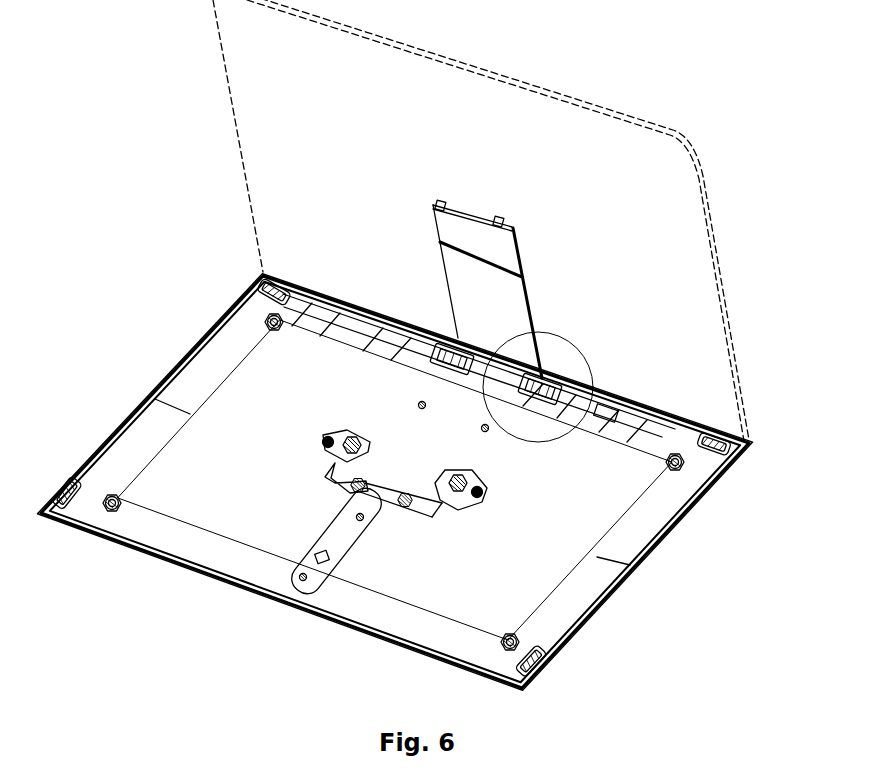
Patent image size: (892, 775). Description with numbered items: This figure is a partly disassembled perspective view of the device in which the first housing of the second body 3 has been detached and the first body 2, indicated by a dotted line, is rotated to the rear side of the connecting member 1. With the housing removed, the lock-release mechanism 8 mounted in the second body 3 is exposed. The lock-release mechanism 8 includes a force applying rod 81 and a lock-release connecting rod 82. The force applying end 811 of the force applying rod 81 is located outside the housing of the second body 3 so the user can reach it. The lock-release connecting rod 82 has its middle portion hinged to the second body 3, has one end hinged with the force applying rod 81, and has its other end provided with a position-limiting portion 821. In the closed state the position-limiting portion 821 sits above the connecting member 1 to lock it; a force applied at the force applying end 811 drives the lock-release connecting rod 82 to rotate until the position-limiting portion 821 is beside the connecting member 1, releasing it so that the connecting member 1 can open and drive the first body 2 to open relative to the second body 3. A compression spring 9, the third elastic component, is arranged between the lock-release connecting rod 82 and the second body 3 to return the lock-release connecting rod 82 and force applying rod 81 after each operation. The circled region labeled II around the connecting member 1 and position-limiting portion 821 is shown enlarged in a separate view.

The connecting member 1 is at (530, 290).
The first body 2 is at (720, 357).
The second body 3 is at (600, 592).
The lock-release mechanism 8 is at (385, 519).
The force applying rod 81 is at (320, 563).
The force applying end 811 is at (282, 590).
The lock-release connecting rod 82 is at (406, 474).
The position-limiting portion 821 is at (370, 445).
The compression spring 9 is at (330, 440).
The part II is at (572, 338).